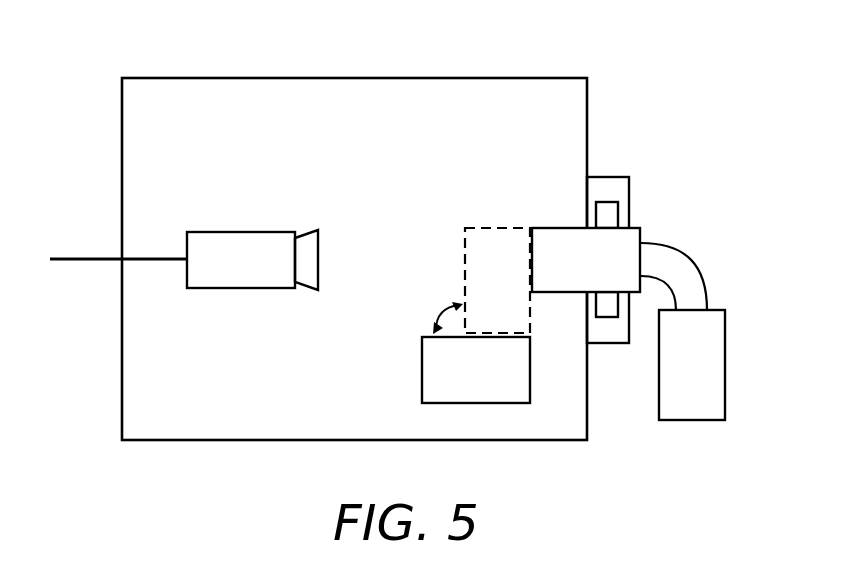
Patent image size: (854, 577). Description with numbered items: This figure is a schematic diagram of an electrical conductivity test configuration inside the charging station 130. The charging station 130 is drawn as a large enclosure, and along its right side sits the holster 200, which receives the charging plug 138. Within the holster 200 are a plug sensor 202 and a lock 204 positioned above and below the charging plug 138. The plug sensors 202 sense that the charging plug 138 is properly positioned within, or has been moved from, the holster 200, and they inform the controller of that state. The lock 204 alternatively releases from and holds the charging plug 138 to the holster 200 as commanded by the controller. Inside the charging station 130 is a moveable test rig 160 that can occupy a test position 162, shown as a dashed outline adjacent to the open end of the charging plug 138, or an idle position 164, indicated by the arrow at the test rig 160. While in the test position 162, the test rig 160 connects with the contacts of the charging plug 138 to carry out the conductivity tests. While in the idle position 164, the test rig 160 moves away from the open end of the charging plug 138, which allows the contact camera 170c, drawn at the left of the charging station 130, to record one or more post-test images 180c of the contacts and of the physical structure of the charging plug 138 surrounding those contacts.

The charging station 130 is at (212, 78).
The contact camera 170c is at (242, 232).
The post-test images 180c is at (83, 259).
The test position 162 is at (492, 225).
The test rig 160 is at (422, 368).
The idle position 164 is at (485, 408).
The holster 200 is at (605, 177).
The plug sensors 202 is at (619, 216).
The lock 204 is at (607, 318).
The charging plug 138 is at (641, 237).